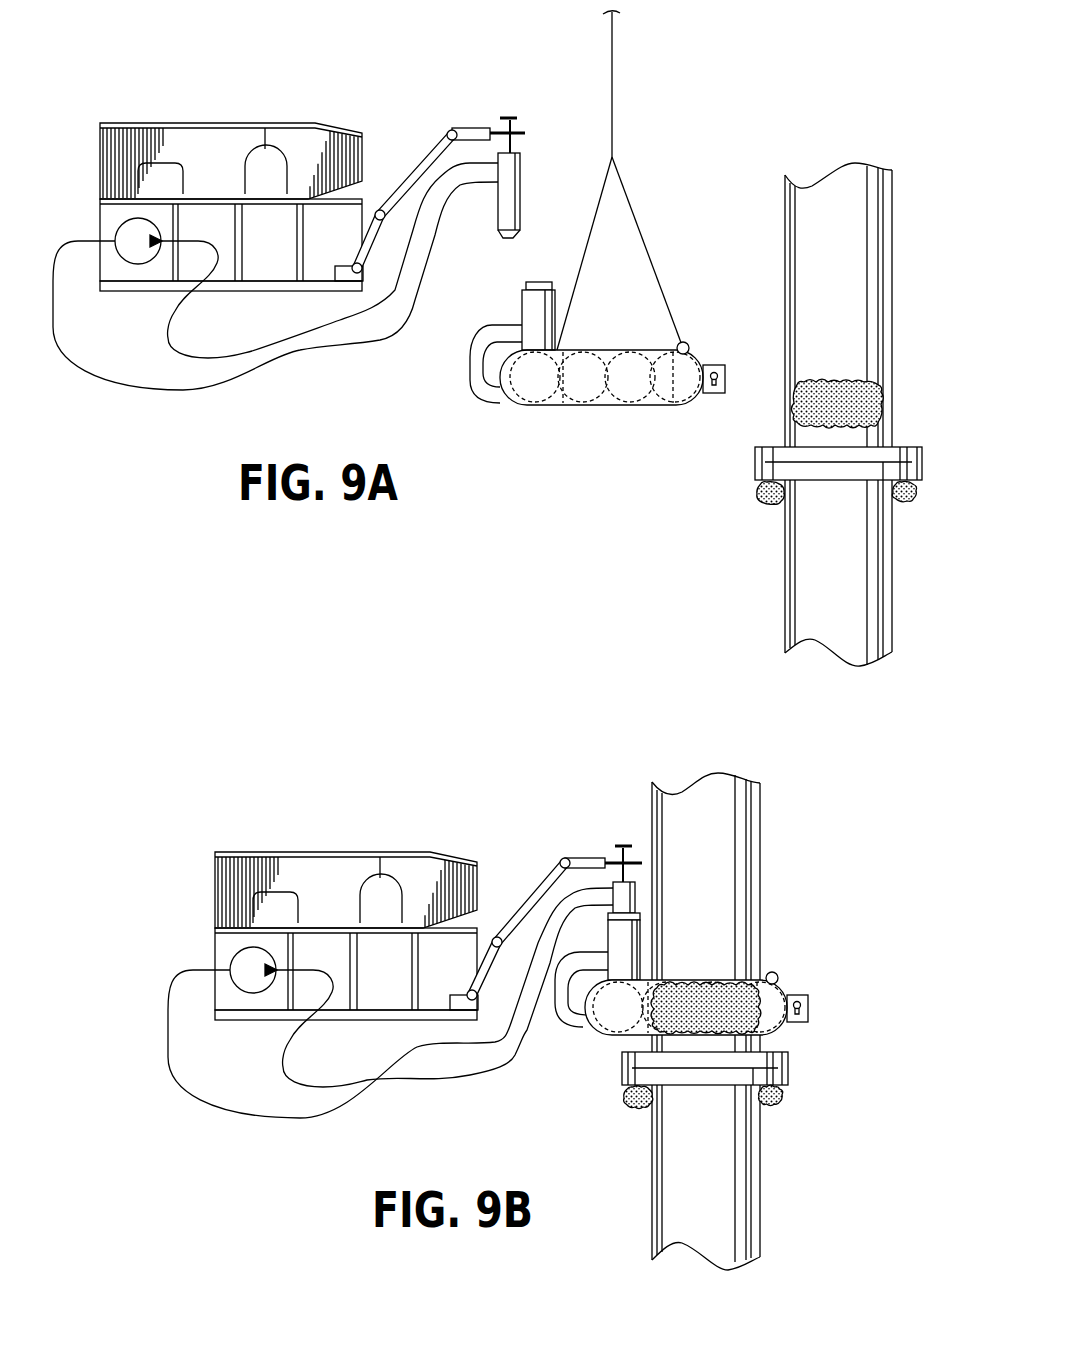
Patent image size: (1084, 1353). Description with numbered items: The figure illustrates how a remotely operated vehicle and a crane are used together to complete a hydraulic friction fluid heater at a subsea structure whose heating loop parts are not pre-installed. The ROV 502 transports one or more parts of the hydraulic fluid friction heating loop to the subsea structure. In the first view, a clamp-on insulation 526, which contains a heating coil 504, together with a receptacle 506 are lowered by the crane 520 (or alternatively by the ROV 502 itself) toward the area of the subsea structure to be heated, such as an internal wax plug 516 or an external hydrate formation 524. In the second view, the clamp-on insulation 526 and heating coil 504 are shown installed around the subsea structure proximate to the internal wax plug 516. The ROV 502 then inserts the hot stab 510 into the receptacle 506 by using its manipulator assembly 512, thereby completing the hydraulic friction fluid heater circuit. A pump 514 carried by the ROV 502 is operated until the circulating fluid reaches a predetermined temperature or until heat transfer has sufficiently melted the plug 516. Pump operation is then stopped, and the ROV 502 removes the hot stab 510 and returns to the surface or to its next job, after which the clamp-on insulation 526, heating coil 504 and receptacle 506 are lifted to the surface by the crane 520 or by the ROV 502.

In FIG. 9A, the ROV 502 is at (212, 132).
In FIG. 9B, the ROV 502 is at (320, 862).
In FIG. 9A, the heating coil 504 is at (592, 397).
In FIG. 9B, the heating coil 504 is at (783, 988).
In FIG. 9A, the receptacle 506 is at (528, 312).
In FIG. 9B, the receptacle 506 is at (633, 955).
In FIG. 9A, the hot stab 510 is at (518, 190).
In FIG. 9B, the hot stab 510 is at (627, 902).
In FIG. 9A, the manipulator assembly 512 is at (412, 173).
In FIG. 9B, the manipulator assembly 512 is at (532, 898).
In FIG. 9A, the pump 514 is at (120, 235).
In FIG. 9B, the pump 514 is at (235, 960).
In FIG. 9A, the internal wax plug 516 is at (842, 388).
In FIG. 9B, the internal wax plug 516 is at (700, 980).
In FIG. 9A, the crane 520 is at (613, 90).
In FIG. 9A, the external hydrate formation 524 is at (913, 495).
In FIG. 9B, the external hydrate formation 524 is at (770, 1105).
In FIG. 9A, the clamp-on insulation 526 is at (550, 403).
In FIG. 9B, the clamp-on insulation 526 is at (610, 1040).